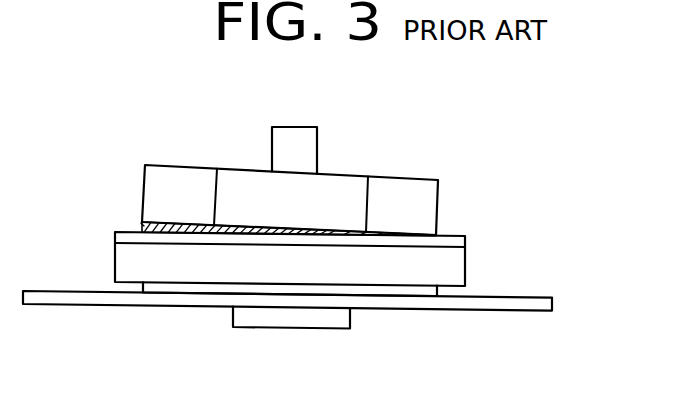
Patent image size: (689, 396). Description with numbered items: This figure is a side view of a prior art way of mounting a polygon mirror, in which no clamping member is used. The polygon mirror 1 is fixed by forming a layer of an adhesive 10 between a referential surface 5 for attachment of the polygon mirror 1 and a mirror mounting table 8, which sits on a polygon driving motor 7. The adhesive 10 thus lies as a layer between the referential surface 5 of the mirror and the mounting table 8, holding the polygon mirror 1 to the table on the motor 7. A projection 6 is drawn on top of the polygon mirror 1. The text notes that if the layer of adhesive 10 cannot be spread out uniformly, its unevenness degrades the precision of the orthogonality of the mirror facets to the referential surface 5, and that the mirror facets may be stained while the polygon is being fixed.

The polygon mirror 1 is at (422, 181).
The referential surface 5 is at (185, 219).
The projection 6 is at (340, 174).
The polygon driving motor 7 is at (411, 273).
The mirror mounting table 8 is at (466, 236).
The adhesive 10 is at (143, 225).